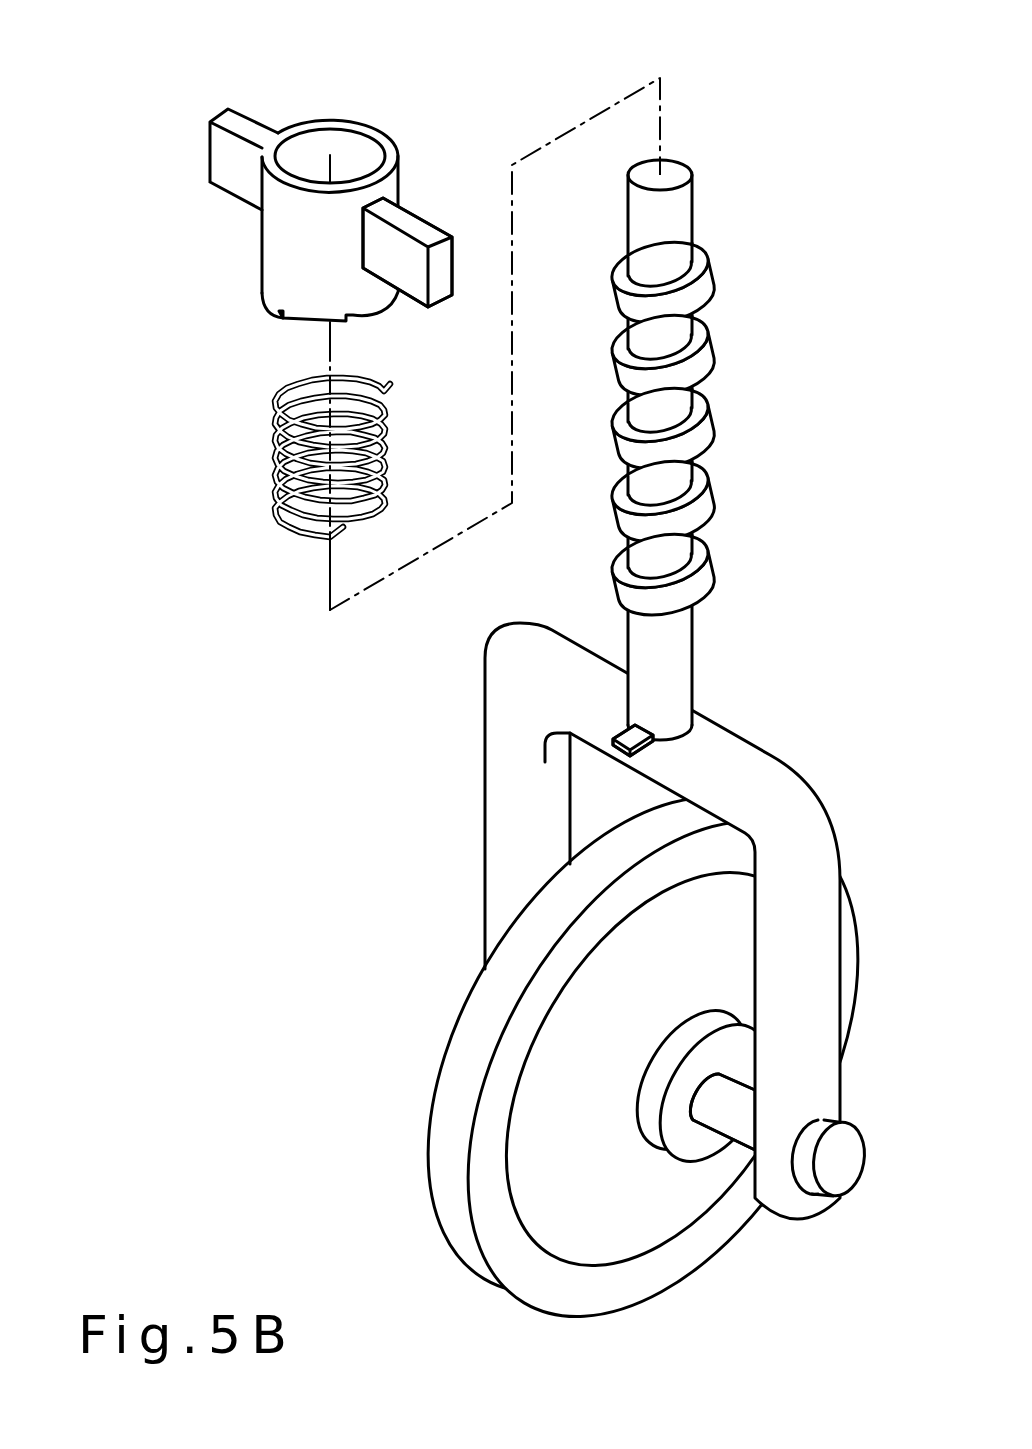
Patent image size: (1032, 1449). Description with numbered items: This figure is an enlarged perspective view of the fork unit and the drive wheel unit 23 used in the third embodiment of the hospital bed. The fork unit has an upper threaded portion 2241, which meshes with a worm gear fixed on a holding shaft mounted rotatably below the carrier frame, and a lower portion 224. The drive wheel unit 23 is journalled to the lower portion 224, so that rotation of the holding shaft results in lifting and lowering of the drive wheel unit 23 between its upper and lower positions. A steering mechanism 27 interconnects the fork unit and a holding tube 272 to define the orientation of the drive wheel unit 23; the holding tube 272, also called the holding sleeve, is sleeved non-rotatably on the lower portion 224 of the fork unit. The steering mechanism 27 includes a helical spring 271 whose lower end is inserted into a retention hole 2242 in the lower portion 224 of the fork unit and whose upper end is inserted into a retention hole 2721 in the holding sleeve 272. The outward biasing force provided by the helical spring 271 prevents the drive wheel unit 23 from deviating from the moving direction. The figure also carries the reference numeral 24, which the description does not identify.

The steering mechanism 27 is at (495, 57).
The helical spring 271 is at (280, 473).
The holding tube 272 is at (285, 225).
The retention hole 2721 is at (355, 140).
The lower portion 224 is at (732, 755).
The upper threaded portion 2241 is at (678, 215).
The retention hole 2242 is at (642, 715).
The drive wheel unit 23 is at (453, 1103).
The wheel hub 24 is at (657, 1217).